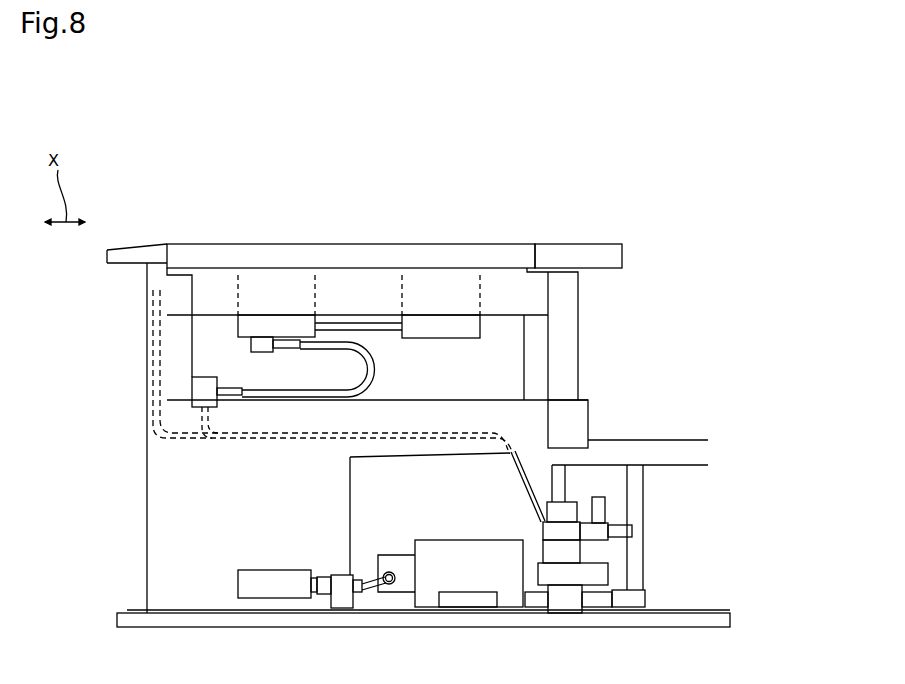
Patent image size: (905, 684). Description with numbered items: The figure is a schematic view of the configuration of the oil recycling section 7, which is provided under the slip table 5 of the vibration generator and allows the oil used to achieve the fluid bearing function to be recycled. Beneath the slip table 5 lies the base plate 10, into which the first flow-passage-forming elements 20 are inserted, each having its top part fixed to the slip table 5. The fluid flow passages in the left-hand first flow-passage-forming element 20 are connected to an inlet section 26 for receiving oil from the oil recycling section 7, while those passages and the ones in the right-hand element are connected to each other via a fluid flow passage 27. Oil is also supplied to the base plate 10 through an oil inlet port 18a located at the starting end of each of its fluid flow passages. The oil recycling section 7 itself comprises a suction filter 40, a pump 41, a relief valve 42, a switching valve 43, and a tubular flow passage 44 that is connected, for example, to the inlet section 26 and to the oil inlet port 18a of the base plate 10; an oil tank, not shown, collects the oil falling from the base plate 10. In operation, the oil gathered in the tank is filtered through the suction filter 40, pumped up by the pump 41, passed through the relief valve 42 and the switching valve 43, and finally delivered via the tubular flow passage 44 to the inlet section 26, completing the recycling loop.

The slip table 5 is at (236, 250).
The oil recycling section 7 is at (145, 451).
The base plate 10 is at (505, 282).
The oil inlet port 18a is at (150, 290).
The first flow-passage-forming element 20 is at (250, 323).
The inlet section 26 is at (250, 343).
The fluid flow passage 27 is at (350, 325).
The suction filter 40 is at (265, 585).
The pump 41 is at (431, 578).
The relief valve 42 is at (560, 602).
The switching valve 43 is at (567, 530).
The tubular flow passage 44 is at (376, 368).